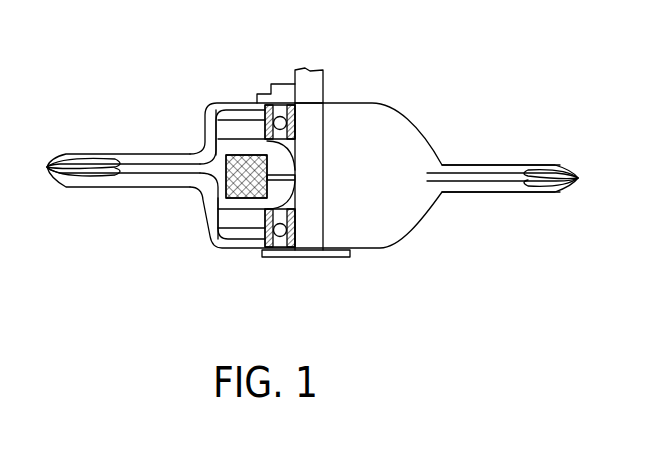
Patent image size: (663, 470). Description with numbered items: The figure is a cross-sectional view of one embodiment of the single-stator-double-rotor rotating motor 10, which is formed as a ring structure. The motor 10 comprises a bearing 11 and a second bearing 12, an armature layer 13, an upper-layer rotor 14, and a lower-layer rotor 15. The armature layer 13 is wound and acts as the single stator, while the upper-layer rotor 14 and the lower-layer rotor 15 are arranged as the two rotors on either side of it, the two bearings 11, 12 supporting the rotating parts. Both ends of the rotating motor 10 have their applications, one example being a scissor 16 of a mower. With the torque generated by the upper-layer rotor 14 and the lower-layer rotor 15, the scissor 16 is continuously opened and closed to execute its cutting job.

The S1R2 rotating motor 10 is at (118, 278).
The bearing 11 is at (268, 97).
The bearing 12 is at (280, 250).
The armature layer 13 is at (221, 187).
The upper-layer rotor 14 is at (228, 119).
The lower-layer rotor 15 is at (241, 222).
The scissor 16 is at (533, 163).